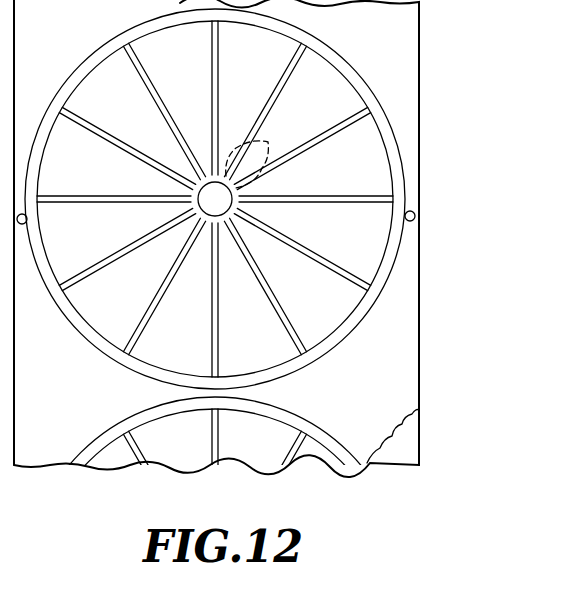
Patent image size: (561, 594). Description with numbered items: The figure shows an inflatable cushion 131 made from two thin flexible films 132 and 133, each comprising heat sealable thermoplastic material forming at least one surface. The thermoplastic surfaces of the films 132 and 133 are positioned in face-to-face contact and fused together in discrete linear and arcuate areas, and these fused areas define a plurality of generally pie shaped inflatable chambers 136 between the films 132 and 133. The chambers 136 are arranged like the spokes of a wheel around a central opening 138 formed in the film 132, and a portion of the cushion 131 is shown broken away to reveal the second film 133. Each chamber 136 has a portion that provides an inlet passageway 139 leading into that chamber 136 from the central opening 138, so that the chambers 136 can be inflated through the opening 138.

The inflatable cushion 131 is at (426, 39).
The thin flexible film 132 is at (410, 340).
The thin flexible film 133 is at (410, 441).
The pie shaped inflatable chambers 136 is at (363, 176).
The central opening 138 is at (198, 204).
The inlet passageway 139 is at (228, 152).